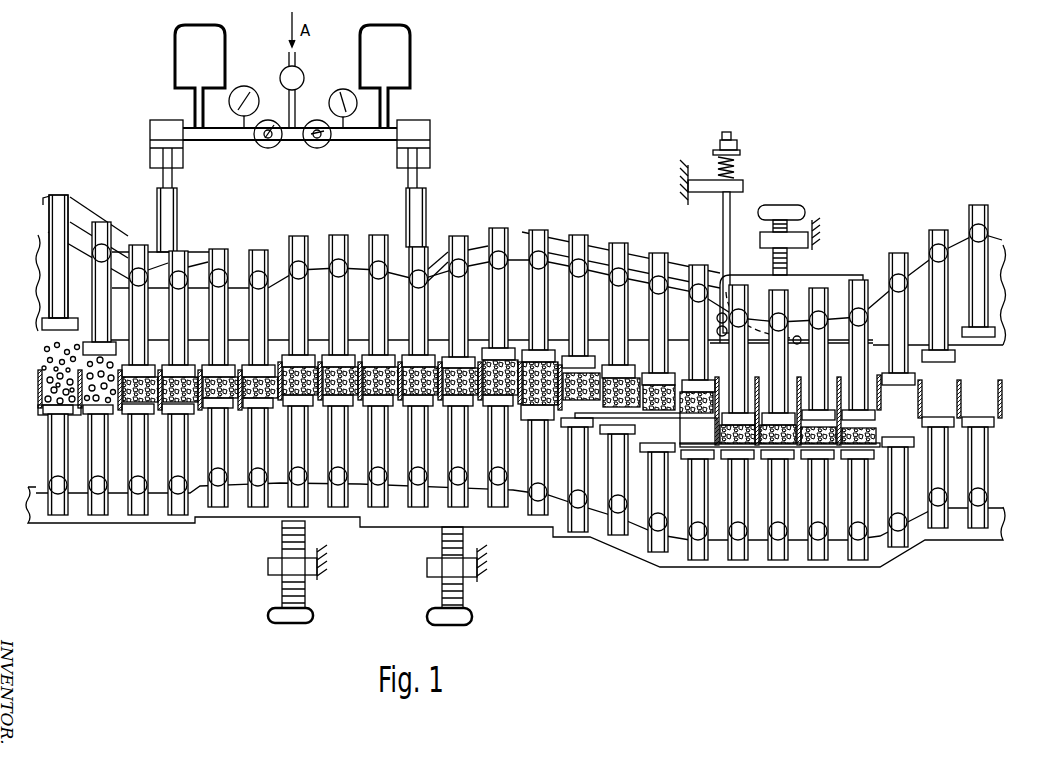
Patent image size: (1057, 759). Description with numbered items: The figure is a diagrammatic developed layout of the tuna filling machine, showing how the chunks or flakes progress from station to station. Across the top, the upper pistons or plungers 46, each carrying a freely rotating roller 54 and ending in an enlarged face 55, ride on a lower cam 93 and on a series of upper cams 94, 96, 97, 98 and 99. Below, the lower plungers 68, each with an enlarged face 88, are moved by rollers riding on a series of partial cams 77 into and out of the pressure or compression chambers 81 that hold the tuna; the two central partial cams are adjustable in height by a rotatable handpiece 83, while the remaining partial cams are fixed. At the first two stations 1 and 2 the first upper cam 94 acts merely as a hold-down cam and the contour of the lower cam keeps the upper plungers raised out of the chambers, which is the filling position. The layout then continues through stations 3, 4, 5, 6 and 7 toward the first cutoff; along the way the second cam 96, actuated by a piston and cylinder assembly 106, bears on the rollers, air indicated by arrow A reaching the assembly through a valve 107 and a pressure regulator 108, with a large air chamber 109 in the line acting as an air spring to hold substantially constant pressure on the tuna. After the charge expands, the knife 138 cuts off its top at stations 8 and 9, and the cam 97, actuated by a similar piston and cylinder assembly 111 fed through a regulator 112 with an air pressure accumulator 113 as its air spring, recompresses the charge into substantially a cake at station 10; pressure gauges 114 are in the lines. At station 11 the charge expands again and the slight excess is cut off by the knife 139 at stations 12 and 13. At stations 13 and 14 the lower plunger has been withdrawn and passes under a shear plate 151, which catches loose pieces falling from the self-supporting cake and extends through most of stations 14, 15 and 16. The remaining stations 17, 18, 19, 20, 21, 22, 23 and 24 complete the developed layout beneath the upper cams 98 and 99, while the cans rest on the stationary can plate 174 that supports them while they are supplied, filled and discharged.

The station 1 is at (58, 460).
The station 2 is at (98, 460).
The lower mold piston 3 is at (138, 459).
The lower mold piston 4 is at (178, 459).
The lower mold piston 5 is at (218, 452).
The lower mold piston 6 is at (258, 452).
The lower mold piston 7 is at (298, 451).
The station 8 is at (338, 451).
The station 9 is at (378, 451).
The station 10 is at (426, 438).
The station 11 is at (458, 451).
The station 12 is at (498, 451).
The station 13 is at (537, 460).
The station 14 is at (577, 475).
The station 15 is at (617, 480).
The station 16 is at (657, 497).
The lower mold piston 17 is at (697, 505).
The lower mold piston 18 is at (737, 505).
The lower mold piston 19 is at (777, 505).
The lower mold piston 20 is at (817, 505).
The lower mold piston 21 is at (857, 505).
The lower mold piston 22 is at (898, 492).
The lower mold piston 23 is at (938, 472).
The lower mold piston 24 is at (978, 472).
The upper piston or plunger 46 is at (55, 265).
The roller 54 is at (52, 226).
The enlarged face 55 is at (44, 324).
The lower plunger 68 is at (423, 451).
The partial cam 77 is at (40, 490).
The pressure chamber 81 is at (38, 388).
The rotatable handpiece 83 is at (312, 612).
The enlarged face 88 is at (38, 412).
The lower cam 93 is at (240, 287).
The first upper cam 94 is at (82, 212).
The second cam 96 is at (194, 262).
The cam 97 is at (433, 238).
The upper cam 98 is at (593, 248).
The upper cam 99 is at (815, 282).
The piston and cylinder assembly 106 is at (178, 200).
The valve 107 is at (304, 78).
The pressure regulator 108 is at (268, 148).
The air chamber 109 is at (214, 50).
The piston and cylinder assembly 111 is at (427, 187).
The regulator 112 is at (323, 144).
The air pressure accumulator 113 is at (398, 57).
The pressure gauge 114 is at (250, 92).
The knife 138 is at (350, 350).
The knife 139 is at (552, 352).
The shear plate 151 is at (598, 418).
The can plate 174 is at (800, 450).